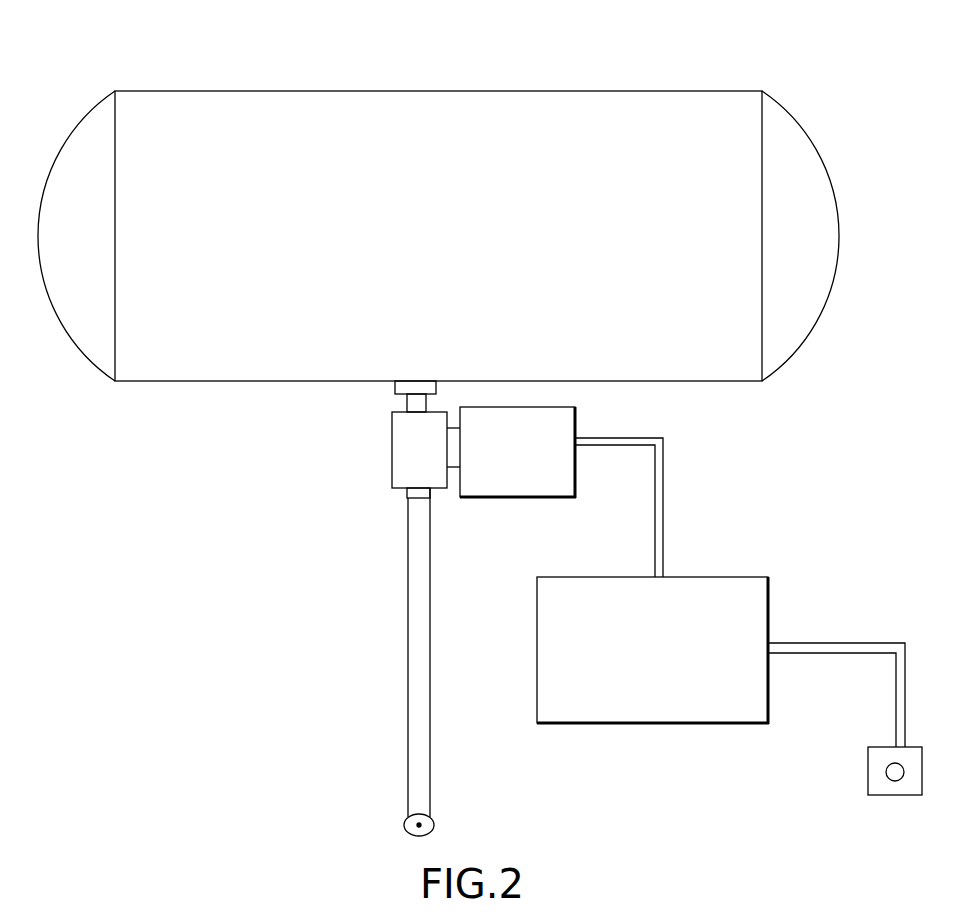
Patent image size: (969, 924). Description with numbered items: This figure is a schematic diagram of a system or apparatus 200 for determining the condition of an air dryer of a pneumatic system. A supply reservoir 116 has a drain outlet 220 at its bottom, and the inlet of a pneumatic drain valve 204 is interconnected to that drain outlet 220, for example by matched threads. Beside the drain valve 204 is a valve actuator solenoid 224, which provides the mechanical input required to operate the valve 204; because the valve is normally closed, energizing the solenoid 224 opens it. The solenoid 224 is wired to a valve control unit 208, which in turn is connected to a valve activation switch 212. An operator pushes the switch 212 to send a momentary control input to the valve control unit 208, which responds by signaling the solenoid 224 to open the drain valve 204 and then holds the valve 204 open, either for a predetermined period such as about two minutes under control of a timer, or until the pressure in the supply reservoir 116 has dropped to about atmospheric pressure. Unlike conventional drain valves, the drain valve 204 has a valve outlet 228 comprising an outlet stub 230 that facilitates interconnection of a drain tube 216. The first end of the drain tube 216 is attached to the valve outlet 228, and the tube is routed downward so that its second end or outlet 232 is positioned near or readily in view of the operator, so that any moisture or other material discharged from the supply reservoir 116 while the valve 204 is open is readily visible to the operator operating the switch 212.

The system or apparatus 200 is at (883, 102).
The supply reservoir 116 is at (401, 269).
The drain outlet 220 is at (426, 401).
The pneumatic drain valve 204 is at (392, 441).
The valve outlet 228 is at (405, 498).
The outlet stub 230 is at (430, 492).
The drain tube 216 is at (408, 653).
The outlet 232 is at (406, 829).
The valve actuator solenoid 224 is at (500, 483).
The valve control unit 208 is at (638, 703).
The valve activation switch 212 is at (886, 771).